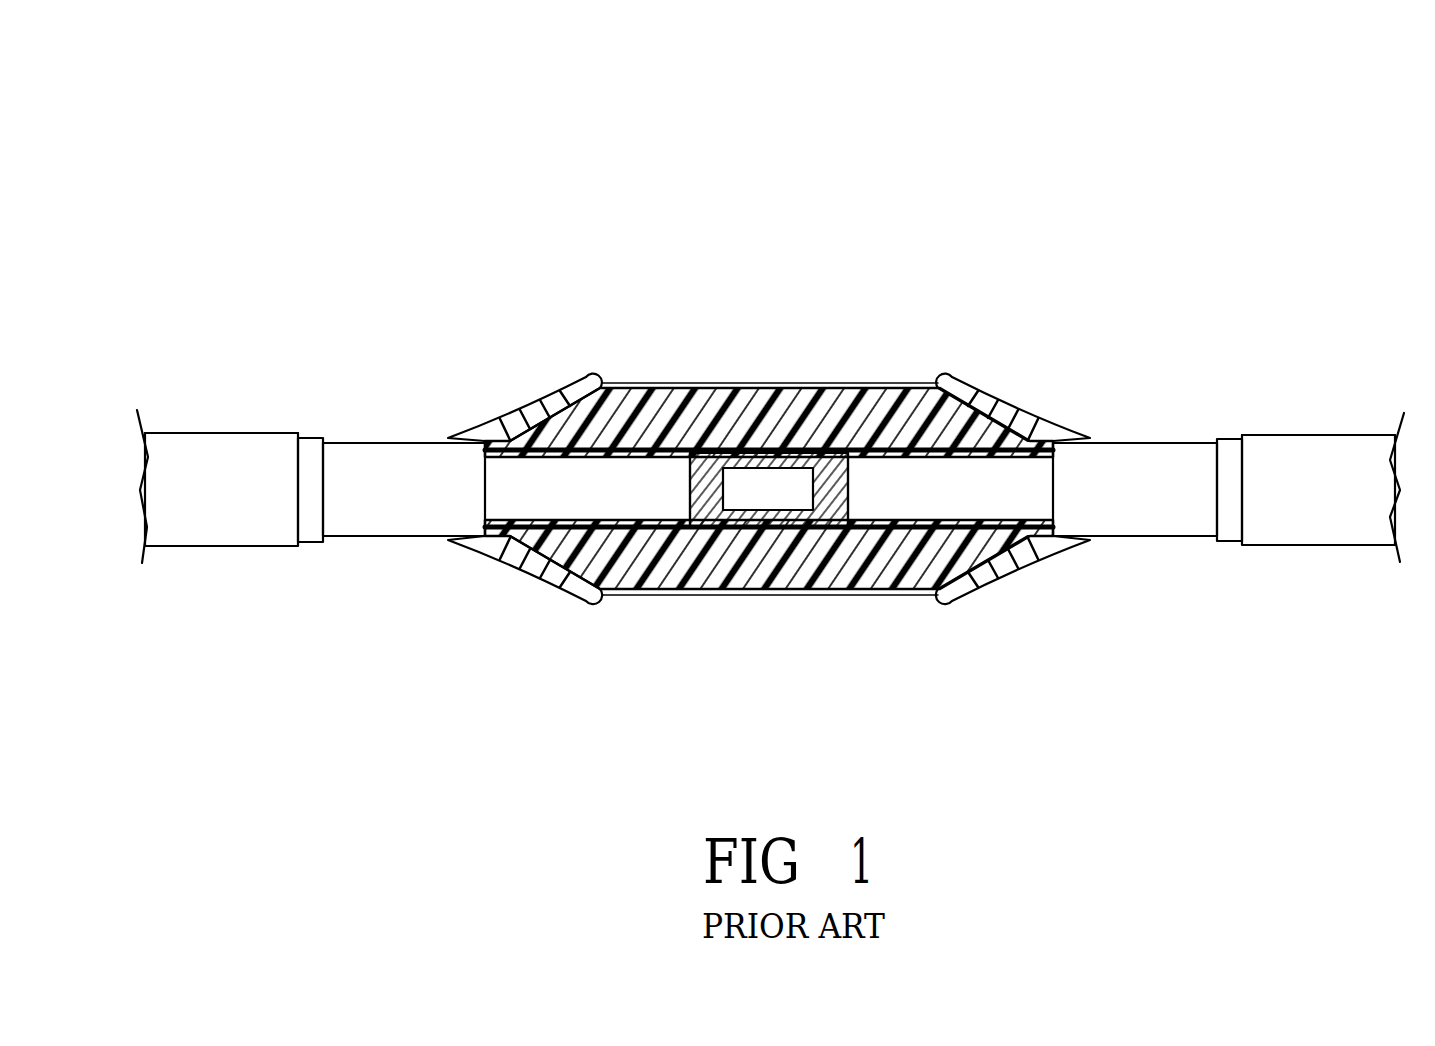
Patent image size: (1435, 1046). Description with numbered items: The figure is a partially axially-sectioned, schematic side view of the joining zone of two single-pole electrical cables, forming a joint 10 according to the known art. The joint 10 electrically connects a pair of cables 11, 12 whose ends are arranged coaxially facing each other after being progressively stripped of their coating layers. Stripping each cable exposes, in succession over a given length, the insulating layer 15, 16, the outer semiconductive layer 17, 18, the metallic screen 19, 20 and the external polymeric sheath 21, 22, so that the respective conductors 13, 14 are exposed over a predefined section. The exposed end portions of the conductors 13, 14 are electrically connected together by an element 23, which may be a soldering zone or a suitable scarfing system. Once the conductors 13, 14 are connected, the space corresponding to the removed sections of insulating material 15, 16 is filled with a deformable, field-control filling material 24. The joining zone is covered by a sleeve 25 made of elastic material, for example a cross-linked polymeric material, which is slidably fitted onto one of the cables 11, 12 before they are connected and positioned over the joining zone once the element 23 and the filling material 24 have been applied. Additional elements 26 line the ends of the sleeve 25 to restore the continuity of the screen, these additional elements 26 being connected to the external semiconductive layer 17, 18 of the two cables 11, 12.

The joint 10 is at (770, 404).
The cable 11 is at (237, 518).
The cable 12 is at (1331, 518).
The conductor 13 is at (710, 490).
The conductor 14 is at (833, 493).
The insulating layer 15 is at (568, 493).
The insulating layer 16 is at (958, 487).
The outer semiconductive layer 17 is at (373, 463).
The outer semiconductive layer 18 is at (1128, 465).
The metallic screen 19 is at (313, 458).
The metallic screen 20 is at (1232, 513).
The external polymeric sheath 21 is at (210, 457).
The external polymeric sheath 22 is at (1295, 462).
The element 23 is at (771, 493).
The filling material 24 is at (780, 457).
The sleeve 25 is at (683, 395).
The additional elements 26 is at (490, 437).